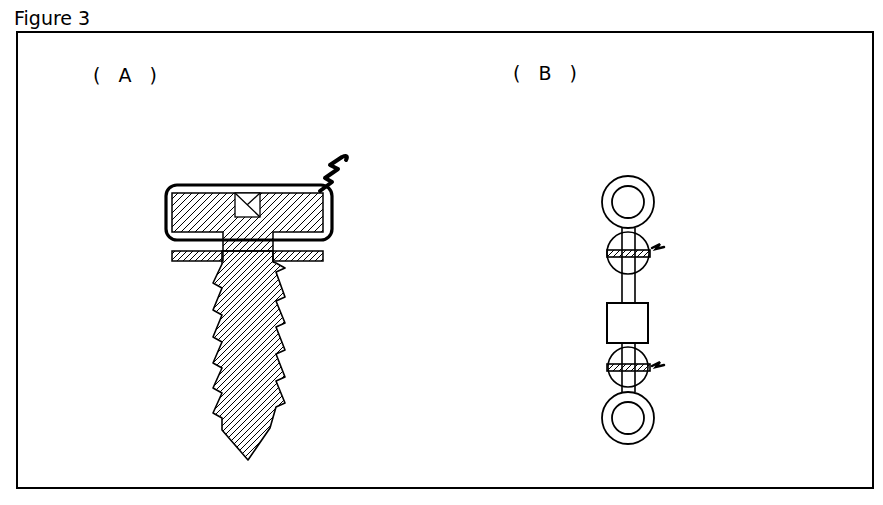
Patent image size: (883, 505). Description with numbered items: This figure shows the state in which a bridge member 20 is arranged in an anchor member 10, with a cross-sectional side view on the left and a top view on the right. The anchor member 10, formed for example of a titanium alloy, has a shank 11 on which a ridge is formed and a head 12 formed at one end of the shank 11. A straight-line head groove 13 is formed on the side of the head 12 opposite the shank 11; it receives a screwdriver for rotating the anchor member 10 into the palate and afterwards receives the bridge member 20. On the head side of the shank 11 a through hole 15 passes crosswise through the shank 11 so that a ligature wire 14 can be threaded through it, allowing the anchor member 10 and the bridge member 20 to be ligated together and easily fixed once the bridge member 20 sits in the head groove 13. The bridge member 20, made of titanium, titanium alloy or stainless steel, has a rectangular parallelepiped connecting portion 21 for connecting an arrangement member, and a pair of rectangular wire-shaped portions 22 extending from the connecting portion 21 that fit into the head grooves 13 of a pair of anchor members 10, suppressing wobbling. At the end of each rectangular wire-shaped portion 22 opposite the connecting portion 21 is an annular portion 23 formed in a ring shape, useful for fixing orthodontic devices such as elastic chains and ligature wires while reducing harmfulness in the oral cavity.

The anchor member 10 is at (435, 276).
The shank 11 is at (278, 345).
The head 12 is at (334, 226).
The head groove 13 is at (263, 192).
The ligature wire 14 is at (334, 205).
The through hole 15 is at (277, 259).
The bridge member 20 is at (634, 283).
The connecting portion 21 is at (633, 323).
The rectangular wire-shaped portion 22 is at (247, 192).
The annular portion 23 is at (649, 196).